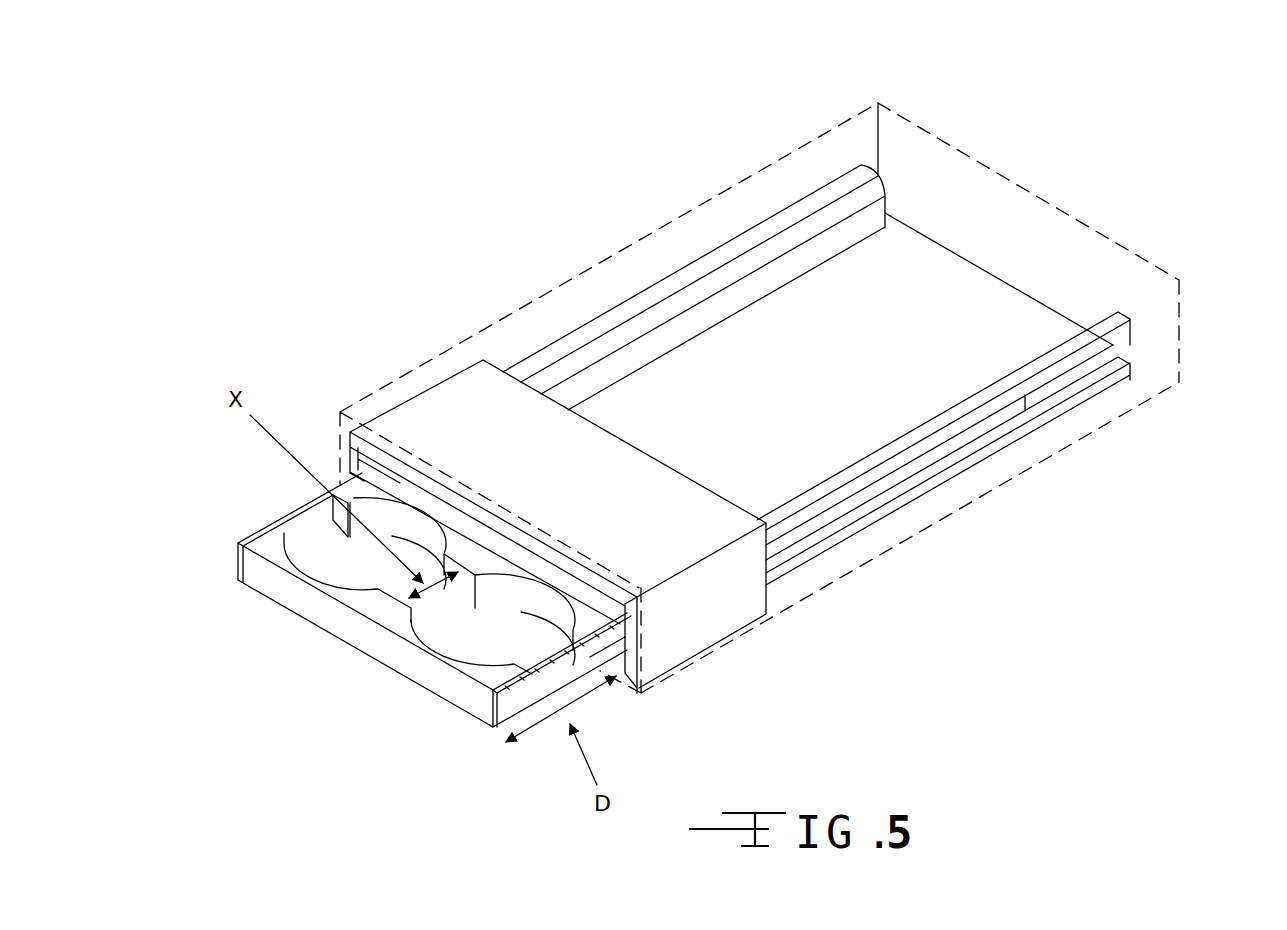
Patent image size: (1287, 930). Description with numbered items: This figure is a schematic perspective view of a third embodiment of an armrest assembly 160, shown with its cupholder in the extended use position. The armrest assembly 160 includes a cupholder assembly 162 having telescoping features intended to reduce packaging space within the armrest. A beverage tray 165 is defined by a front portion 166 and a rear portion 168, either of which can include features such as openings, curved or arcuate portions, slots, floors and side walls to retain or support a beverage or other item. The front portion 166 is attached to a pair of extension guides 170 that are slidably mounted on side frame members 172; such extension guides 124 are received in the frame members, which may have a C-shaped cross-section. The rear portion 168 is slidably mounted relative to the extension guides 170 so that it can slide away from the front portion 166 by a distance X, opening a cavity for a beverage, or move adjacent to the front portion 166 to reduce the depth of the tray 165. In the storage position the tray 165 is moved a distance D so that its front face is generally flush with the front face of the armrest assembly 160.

The armrest assembly 160 is at (1184, 147).
The side frame members 172 is at (803, 213).
The extension guides 124 is at (977, 437).
The rear portion 168 is at (357, 500).
The cupholder assembly 162 is at (432, 627).
The beverage tray 165 is at (432, 597).
The extension guides 170 is at (295, 497).
The front portion 166 is at (275, 540).